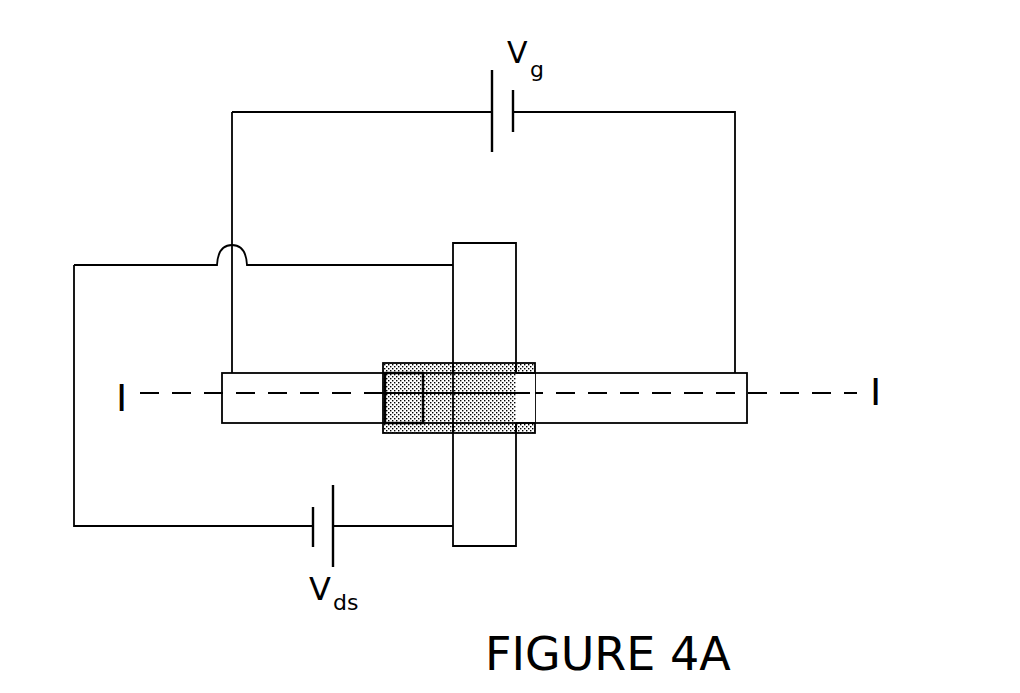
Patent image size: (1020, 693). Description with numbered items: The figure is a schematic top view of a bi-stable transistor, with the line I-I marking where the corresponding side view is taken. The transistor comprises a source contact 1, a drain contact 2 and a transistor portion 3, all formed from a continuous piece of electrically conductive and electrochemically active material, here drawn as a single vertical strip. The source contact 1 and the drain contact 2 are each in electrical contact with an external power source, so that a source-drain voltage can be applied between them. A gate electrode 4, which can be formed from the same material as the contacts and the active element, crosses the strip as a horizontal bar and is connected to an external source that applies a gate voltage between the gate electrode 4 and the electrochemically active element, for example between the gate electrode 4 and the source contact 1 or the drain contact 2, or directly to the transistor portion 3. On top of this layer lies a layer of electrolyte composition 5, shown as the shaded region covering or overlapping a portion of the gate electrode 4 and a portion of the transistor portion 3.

The source contact 1 is at (483, 242).
The drain contact 2 is at (483, 547).
The transistor portion 3 is at (450, 394).
The gate electrode 4 is at (222, 397).
The electrolyte composition layer 5 is at (410, 363).